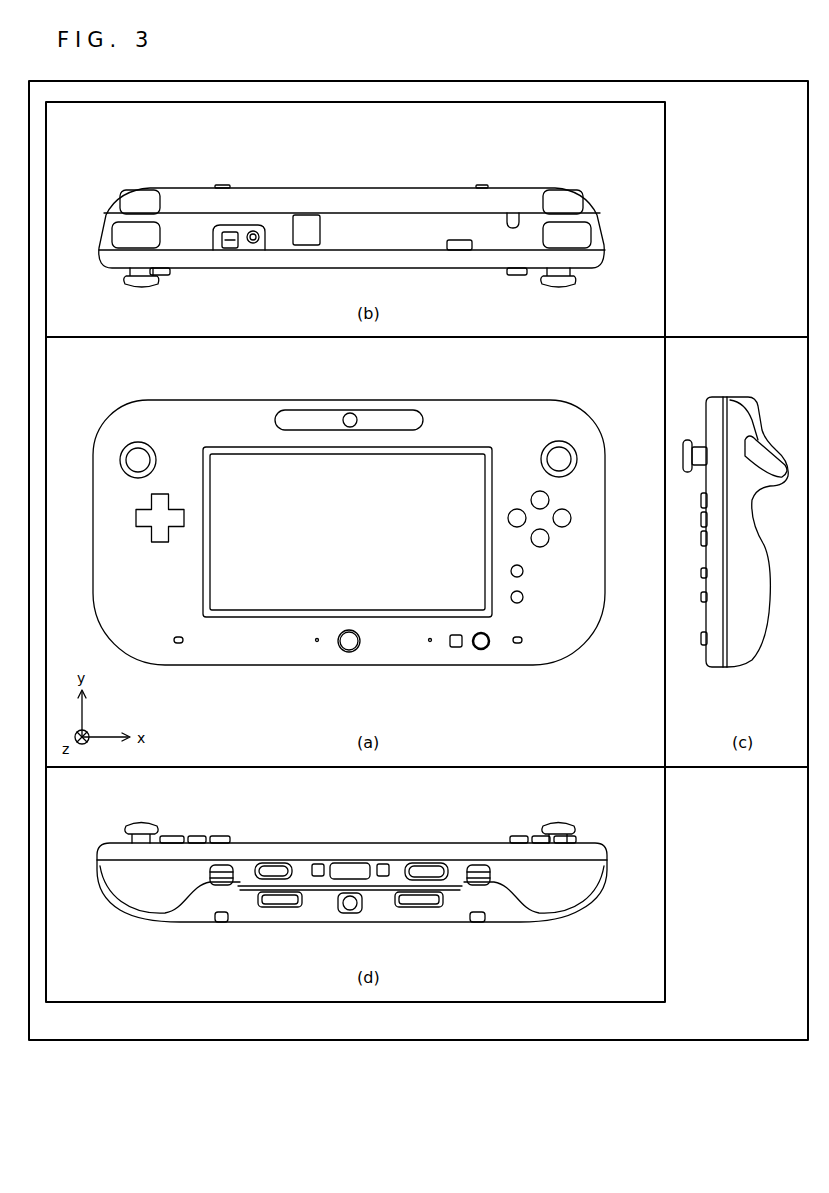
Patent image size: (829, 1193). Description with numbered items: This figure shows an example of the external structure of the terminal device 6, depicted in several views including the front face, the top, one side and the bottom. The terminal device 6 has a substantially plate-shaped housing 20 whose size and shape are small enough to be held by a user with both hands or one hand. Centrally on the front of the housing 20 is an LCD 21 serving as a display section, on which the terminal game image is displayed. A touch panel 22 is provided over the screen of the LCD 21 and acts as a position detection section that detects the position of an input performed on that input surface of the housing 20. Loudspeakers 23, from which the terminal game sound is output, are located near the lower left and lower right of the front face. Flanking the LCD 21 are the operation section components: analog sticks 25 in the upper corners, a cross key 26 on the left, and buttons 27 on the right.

The terminal device 6 is at (637, 372).
The housing 20 is at (461, 400).
The LCD 21 is at (400, 617).
The touch panel 22 is at (285, 592).
The loudspeakers 23 is at (178, 647).
The analog sticks 25 is at (137, 457).
The cross key 26 is at (140, 520).
The buttons 27 is at (571, 518).